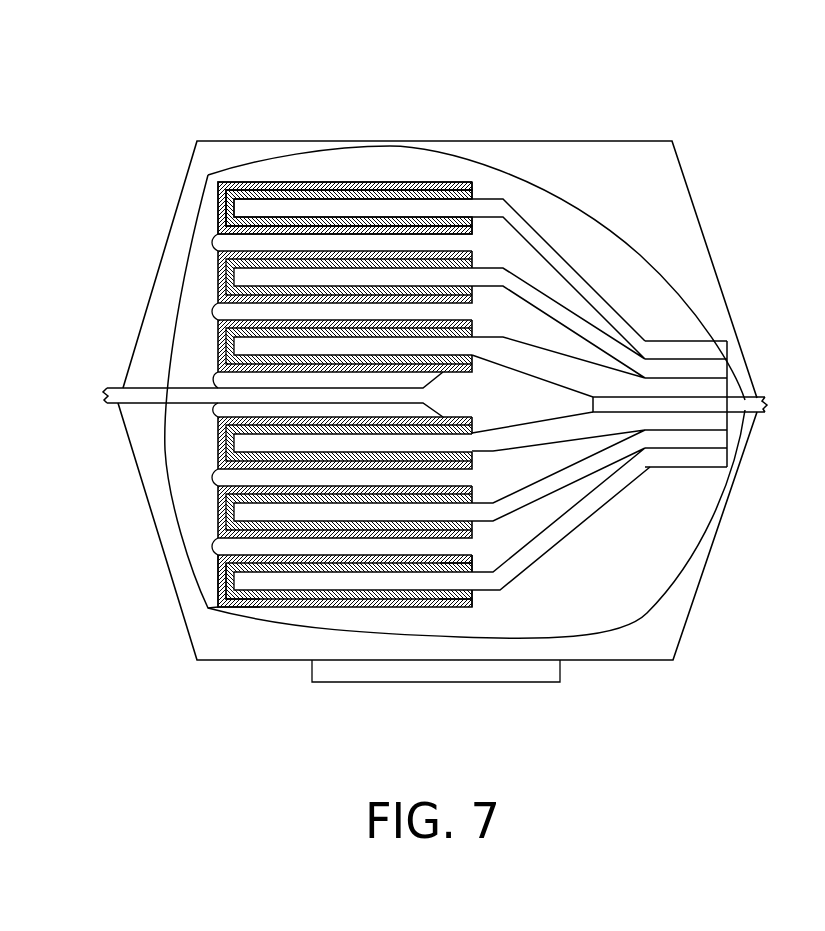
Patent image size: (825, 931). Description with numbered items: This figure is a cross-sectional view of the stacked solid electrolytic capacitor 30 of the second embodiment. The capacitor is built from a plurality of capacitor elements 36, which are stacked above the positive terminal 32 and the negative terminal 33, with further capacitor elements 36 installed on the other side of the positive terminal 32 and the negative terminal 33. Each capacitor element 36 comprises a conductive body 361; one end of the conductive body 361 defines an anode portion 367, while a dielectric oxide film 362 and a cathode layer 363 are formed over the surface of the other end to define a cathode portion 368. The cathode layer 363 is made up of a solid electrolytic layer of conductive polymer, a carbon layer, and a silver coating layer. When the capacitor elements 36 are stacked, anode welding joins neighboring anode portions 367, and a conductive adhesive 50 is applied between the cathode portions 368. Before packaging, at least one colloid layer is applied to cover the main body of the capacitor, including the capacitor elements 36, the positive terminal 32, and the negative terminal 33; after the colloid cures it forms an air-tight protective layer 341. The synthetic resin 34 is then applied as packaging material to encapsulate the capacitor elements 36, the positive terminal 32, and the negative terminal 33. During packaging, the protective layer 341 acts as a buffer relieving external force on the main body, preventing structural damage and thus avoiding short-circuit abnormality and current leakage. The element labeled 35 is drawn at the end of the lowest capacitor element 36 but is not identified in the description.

The solid electrolytic capacitor 30 is at (566, 128).
The positive terminal 32 is at (745, 398).
The negative terminal 33 is at (132, 390).
The synthetic resin 34 is at (662, 190).
The channel end 35 is at (478, 594).
The capacitor element 36 is at (247, 205).
The conductive adhesive 50 is at (250, 603).
The protective layer 341 is at (610, 236).
The conductive body 361 is at (577, 283).
The dielectric oxide film 362 is at (388, 186).
The cathode layer 363 is at (265, 188).
The anode portion 367 is at (567, 530).
The cathode portion 368 is at (277, 590).